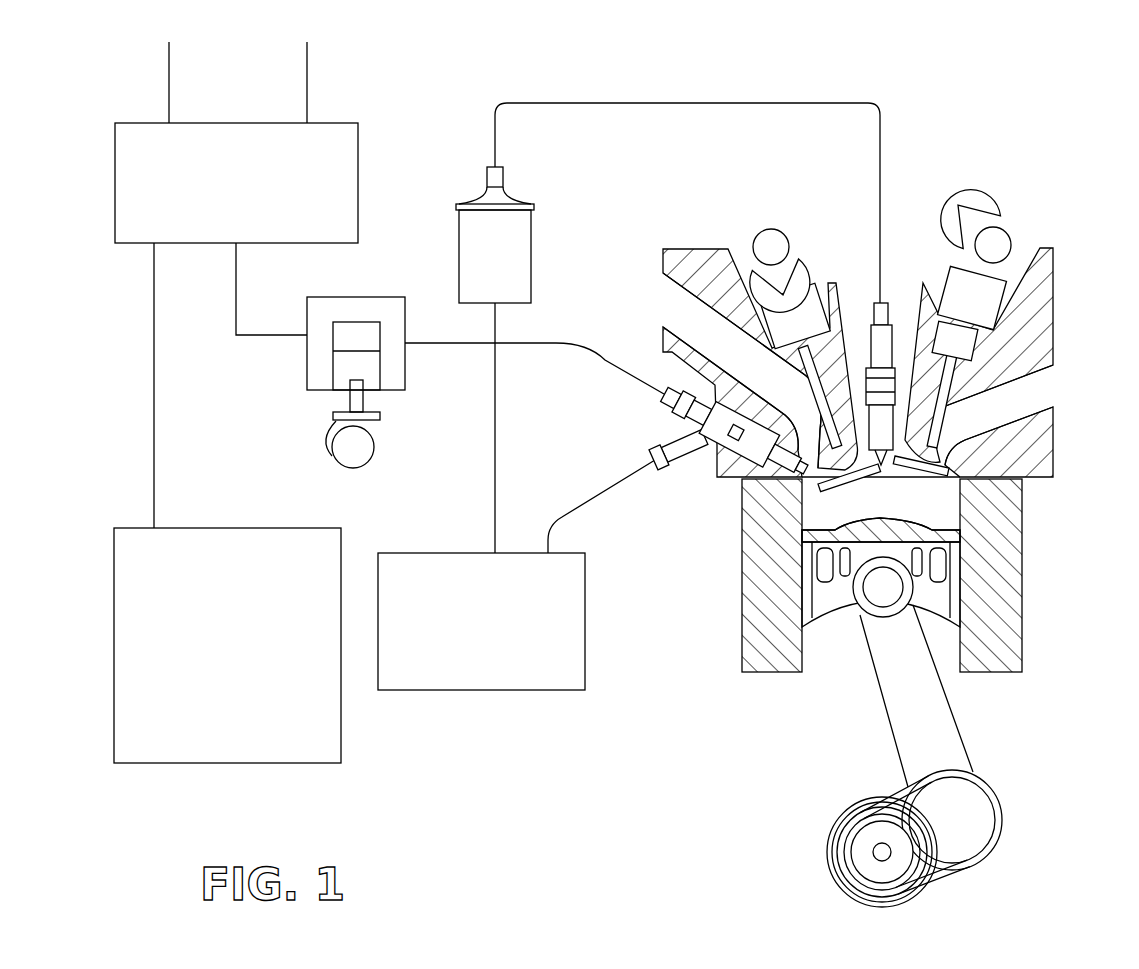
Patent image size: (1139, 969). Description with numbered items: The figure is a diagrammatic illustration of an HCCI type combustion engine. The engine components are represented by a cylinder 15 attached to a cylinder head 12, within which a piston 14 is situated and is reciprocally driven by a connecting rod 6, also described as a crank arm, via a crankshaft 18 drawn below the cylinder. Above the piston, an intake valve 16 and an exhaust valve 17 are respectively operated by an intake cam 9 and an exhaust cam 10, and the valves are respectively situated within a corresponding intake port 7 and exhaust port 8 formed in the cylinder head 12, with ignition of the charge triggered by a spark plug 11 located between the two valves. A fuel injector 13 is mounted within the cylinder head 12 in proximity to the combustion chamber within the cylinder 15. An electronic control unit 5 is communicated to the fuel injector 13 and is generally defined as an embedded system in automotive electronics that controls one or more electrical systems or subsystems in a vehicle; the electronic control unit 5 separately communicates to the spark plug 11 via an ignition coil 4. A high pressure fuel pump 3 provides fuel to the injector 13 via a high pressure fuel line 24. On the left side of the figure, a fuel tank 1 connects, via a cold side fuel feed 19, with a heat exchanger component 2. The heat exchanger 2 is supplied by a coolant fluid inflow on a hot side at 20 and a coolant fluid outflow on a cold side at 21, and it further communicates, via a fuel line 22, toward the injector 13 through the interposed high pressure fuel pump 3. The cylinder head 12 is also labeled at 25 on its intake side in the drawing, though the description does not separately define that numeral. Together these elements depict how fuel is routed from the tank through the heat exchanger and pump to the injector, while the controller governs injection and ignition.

The fuel tank 1 is at (227, 645).
The heat exchanger component 2 is at (236, 183).
The high pressure fuel pump 3 is at (395, 350).
The ignition coil 4 is at (668, 328).
The electronic control unit 5 is at (516, 575).
The connecting rod 6 is at (916, 696).
The intake port 7 is at (668, 303).
The exhaust port 8 is at (1055, 392).
The intake cam 9 is at (768, 222).
The exhaust cam 10 is at (993, 218).
The spark plug 11 is at (893, 340).
The cylinder head 12 is at (1062, 348).
The fuel injector 13 is at (718, 478).
The piston 14 is at (963, 578).
The cylinder 15 is at (760, 583).
The intake valve 16 is at (818, 433).
The exhaust valve 17 is at (928, 445).
The crankshaft 18 is at (914, 838).
The cold side fuel feed 19 is at (154, 451).
The coolant fluid inflow 20 is at (169, 88).
The coolant fluid outflow 21 is at (307, 88).
The fuel line 22 is at (236, 303).
The high pressure fuel line 24 is at (592, 343).
The cylinder head intake side 25 is at (697, 258).